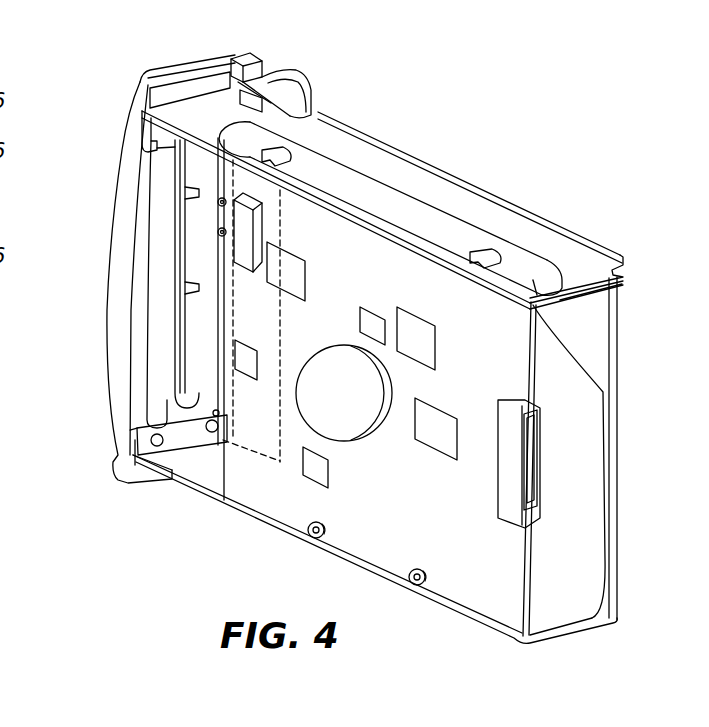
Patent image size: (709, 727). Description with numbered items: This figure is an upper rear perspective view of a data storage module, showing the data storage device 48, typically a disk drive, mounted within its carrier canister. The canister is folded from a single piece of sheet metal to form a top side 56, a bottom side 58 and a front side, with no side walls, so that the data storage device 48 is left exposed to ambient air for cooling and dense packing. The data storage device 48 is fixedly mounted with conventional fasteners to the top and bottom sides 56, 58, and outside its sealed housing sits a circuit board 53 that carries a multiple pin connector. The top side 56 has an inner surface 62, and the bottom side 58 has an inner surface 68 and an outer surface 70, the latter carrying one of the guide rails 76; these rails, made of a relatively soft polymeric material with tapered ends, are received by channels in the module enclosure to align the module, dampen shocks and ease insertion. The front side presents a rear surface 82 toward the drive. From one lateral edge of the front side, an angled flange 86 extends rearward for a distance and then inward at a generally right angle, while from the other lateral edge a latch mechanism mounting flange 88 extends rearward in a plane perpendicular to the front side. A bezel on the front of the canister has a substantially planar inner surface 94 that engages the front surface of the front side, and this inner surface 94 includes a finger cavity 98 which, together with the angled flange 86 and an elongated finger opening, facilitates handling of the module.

The data storage device 48 is at (255, 493).
The circuit board 53 is at (403, 500).
The top side 56 is at (646, 272).
The bottom side 58 is at (618, 620).
The inner surface 62 is at (566, 305).
The inner surface 68 is at (498, 580).
The outer surface 70 is at (448, 612).
The guide rails 76 is at (430, 224).
The rear surface 82 is at (172, 440).
The angled flange 86 is at (130, 393).
The latch mechanism mounting flange 88 is at (180, 421).
The inner surface 94 is at (182, 219).
The finger cavity 98 is at (196, 316).